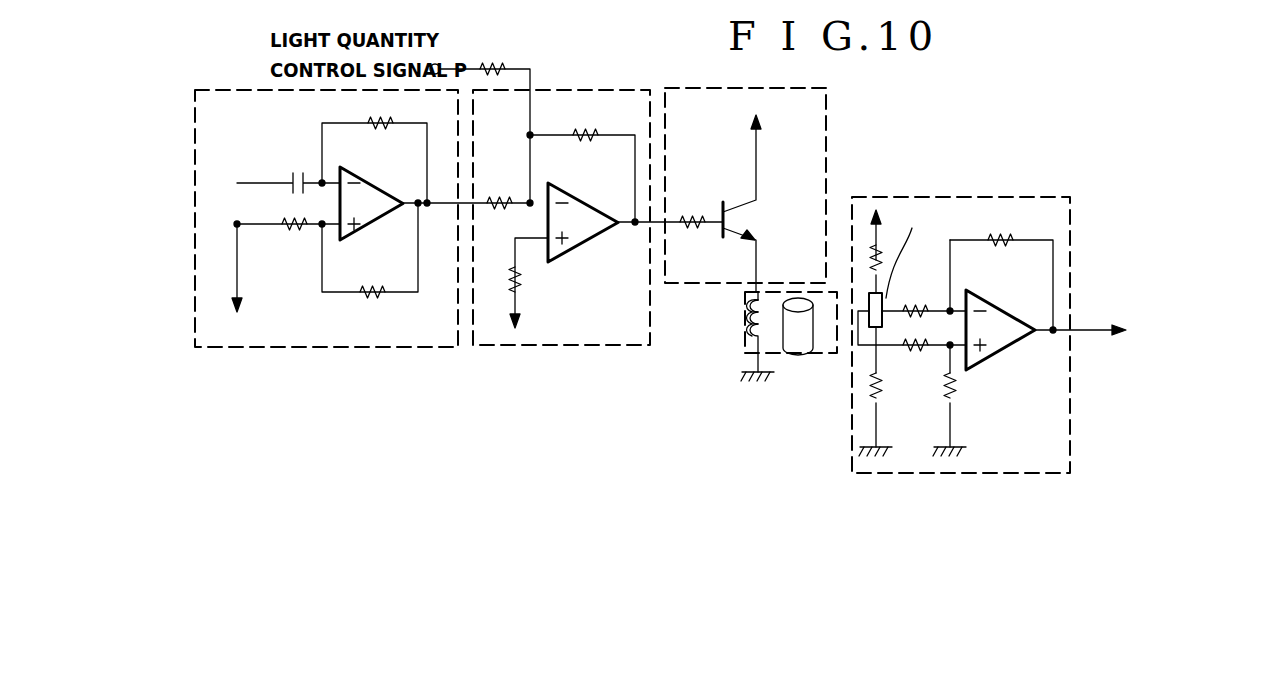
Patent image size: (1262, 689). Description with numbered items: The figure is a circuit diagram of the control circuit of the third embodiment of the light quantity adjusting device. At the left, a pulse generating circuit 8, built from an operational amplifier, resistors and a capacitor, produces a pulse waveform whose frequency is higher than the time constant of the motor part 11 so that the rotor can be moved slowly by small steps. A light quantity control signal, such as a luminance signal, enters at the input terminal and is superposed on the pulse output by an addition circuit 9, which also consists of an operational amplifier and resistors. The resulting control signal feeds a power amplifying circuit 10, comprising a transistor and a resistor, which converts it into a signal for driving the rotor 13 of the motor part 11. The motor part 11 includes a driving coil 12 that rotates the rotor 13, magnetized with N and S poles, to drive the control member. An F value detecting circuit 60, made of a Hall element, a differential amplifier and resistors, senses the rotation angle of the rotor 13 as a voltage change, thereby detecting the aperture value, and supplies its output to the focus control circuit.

The pulse generating circuit 8 is at (222, 347).
The addition circuit 9 is at (495, 345).
The power amplifying circuit 10 is at (826, 120).
The motor part 11 is at (768, 353).
The driving coil 12 is at (746, 328).
The rotor 13 is at (820, 350).
The F value detecting circuit 60 is at (1037, 197).